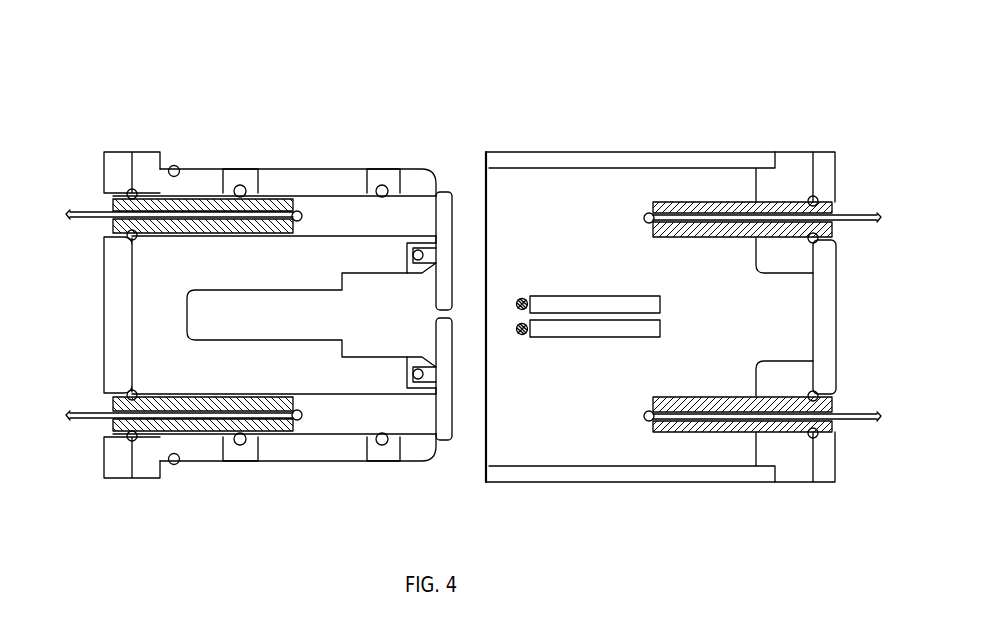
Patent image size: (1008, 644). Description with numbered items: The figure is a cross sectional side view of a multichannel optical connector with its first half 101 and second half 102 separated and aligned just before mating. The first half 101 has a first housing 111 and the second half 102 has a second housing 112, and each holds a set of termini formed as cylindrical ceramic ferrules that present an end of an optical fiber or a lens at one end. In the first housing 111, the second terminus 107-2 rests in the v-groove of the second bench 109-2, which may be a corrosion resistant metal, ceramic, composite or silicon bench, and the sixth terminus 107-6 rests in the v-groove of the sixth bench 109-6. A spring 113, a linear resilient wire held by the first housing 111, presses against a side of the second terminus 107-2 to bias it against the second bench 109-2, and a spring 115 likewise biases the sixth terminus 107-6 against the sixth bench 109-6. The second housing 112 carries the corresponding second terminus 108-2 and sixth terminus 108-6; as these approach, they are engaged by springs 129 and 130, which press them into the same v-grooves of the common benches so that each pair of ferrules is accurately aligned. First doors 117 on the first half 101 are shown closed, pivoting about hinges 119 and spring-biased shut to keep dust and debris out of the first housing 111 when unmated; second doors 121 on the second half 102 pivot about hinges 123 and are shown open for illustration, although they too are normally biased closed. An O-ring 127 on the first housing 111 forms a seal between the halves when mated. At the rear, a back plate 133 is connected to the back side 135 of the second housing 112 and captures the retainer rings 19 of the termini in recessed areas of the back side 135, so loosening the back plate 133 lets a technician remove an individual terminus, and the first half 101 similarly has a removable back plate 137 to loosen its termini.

The first half 101 is at (276, 74).
The second half 102 is at (662, 73).
The first housing 111 is at (145, 163).
The O-ring 127 is at (174, 165).
The second terminus 107-2 is at (185, 197).
The sixth terminus 107-6 is at (188, 427).
The second bench 109-2 is at (247, 252).
The sixth bench 109-6 is at (247, 382).
The spring 113 is at (244, 184).
The spring 129 is at (381, 185).
The spring 115 is at (243, 446).
The spring 130 is at (382, 447).
The back plate 137 is at (118, 308).
The hinges 119 is at (411, 255).
The first doors 117 is at (453, 230).
The second housing 112 is at (552, 163).
The back side 135 is at (800, 447).
The second terminus 108-2 is at (697, 200).
The sixth terminus 108-6 is at (700, 422).
The back plate 133 is at (827, 337).
The retainer rings 19 is at (129, 240).
The second doors 121 is at (588, 303).
The hinges 123 is at (518, 296).